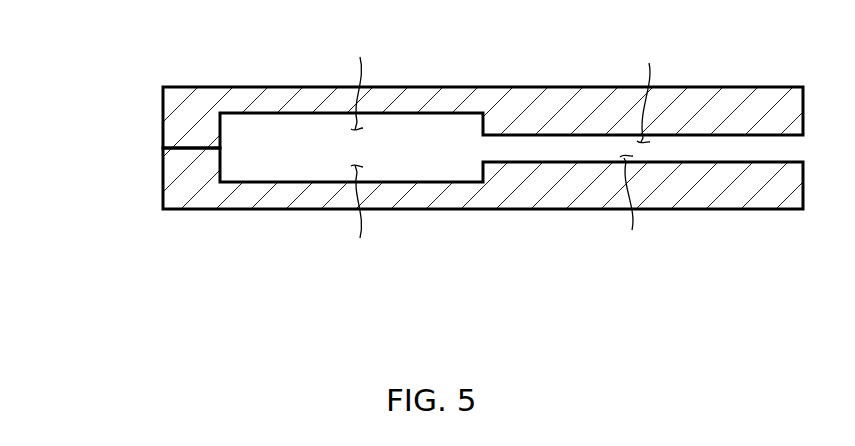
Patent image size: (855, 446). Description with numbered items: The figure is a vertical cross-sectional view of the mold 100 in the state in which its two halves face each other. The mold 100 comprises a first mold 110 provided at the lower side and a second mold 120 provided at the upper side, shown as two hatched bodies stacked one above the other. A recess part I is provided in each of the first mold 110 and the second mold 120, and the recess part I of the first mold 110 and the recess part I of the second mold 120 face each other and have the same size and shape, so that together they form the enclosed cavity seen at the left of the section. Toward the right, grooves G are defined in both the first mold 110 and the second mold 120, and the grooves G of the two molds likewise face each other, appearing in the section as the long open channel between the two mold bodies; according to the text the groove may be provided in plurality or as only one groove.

The mold 100 is at (436, 148).
The first mold 110 is at (163, 176).
The second mold 120 is at (163, 120).
The recess part I is at (357, 149).
The groove G is at (651, 150).